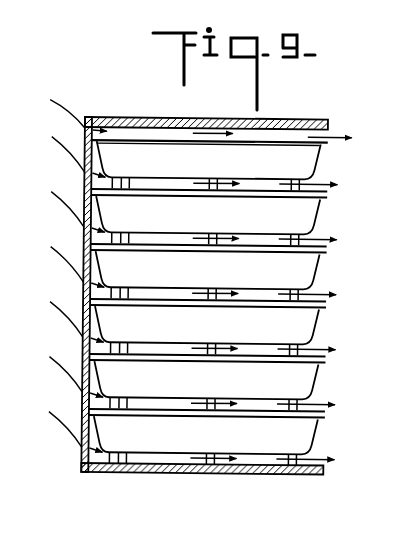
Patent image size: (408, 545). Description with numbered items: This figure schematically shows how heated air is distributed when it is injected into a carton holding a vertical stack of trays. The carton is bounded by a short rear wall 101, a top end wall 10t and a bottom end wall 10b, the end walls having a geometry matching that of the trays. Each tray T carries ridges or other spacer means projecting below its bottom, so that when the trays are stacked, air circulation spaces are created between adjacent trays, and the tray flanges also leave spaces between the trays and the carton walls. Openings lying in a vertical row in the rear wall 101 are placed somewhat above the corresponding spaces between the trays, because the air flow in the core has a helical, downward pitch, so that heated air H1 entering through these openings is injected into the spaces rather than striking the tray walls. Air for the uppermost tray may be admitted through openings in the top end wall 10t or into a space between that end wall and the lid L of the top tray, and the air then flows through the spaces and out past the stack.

The top end wall 10t is at (128, 118).
The rear wall 101 is at (84, 245).
The bottom end wall 10b is at (135, 469).
The tray T is at (181, 148).
The lid L is at (329, 143).
The heated air H1 is at (82, 285).